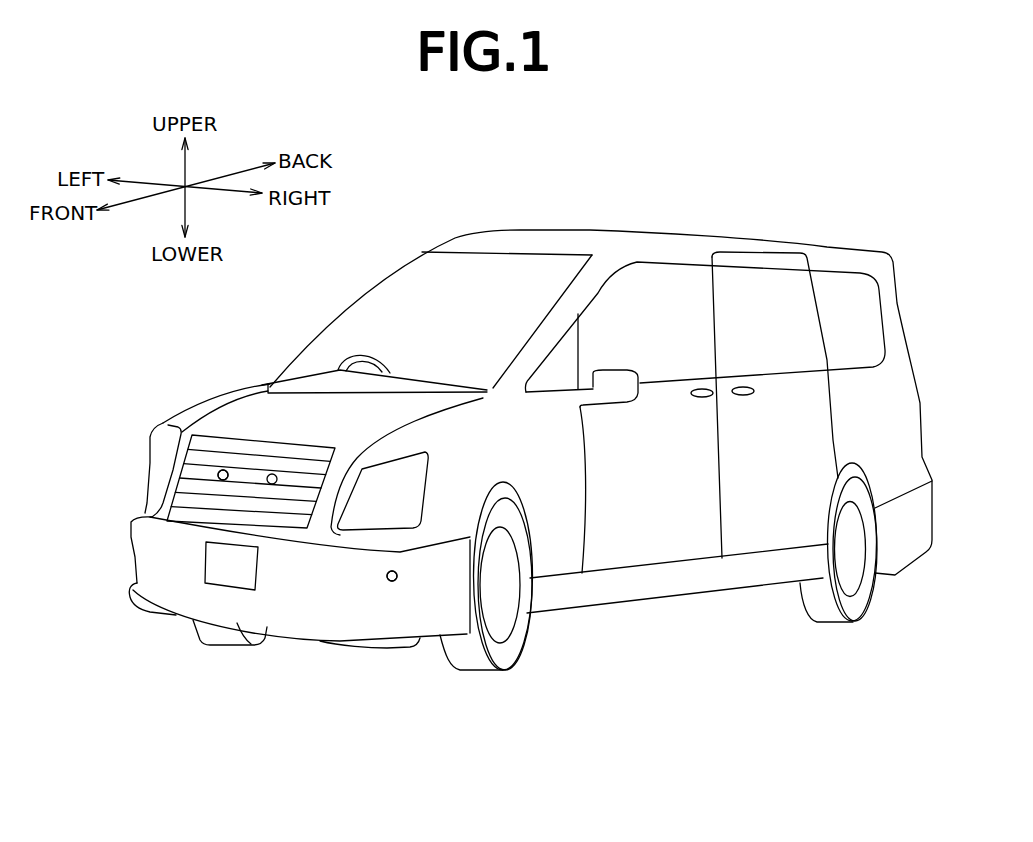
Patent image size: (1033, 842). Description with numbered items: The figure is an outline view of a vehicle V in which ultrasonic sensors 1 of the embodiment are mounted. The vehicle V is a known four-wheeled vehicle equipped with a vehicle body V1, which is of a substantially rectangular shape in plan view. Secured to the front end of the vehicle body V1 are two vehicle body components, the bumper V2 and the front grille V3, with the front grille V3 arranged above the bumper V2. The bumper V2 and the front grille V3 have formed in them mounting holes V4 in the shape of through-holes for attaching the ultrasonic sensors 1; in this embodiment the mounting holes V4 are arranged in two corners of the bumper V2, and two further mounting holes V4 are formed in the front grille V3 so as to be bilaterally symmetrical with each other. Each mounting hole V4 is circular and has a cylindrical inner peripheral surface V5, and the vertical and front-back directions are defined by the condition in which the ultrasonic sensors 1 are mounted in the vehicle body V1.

The ultrasonic sensor 1 is at (229, 472).
The vehicle V is at (895, 241).
The vehicle body V1 is at (674, 587).
The bumper V2 is at (427, 615).
The front grille V3 is at (185, 495).
The mounting hole V4 is at (221, 469).
The cylindrical inner peripheral surface V5 is at (271, 484).